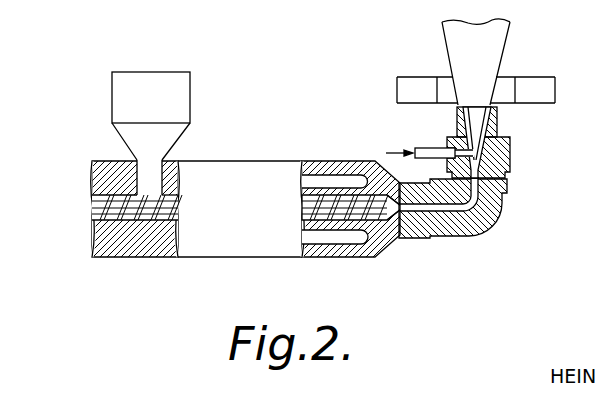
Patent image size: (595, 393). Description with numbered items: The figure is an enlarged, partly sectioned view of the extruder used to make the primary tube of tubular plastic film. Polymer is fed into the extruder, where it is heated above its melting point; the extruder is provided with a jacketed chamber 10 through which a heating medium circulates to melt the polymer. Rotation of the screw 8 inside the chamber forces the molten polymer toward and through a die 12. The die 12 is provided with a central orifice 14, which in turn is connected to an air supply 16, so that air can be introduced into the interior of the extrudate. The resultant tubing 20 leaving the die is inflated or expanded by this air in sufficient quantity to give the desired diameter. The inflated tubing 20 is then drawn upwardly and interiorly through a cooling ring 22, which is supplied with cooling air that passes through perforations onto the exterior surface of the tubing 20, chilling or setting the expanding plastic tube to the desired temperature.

The screw 8 is at (382, 212).
The jacketed chamber 10 is at (350, 238).
The die 12 is at (510, 163).
The central orifice 14 is at (498, 128).
The air supply 16 is at (433, 150).
The tubing 20 is at (460, 52).
The cooling ring 22 is at (531, 85).